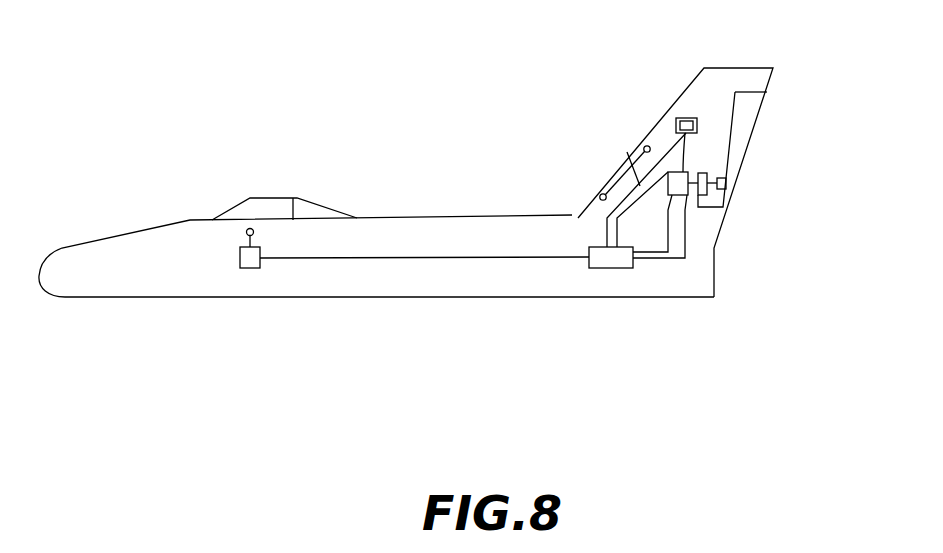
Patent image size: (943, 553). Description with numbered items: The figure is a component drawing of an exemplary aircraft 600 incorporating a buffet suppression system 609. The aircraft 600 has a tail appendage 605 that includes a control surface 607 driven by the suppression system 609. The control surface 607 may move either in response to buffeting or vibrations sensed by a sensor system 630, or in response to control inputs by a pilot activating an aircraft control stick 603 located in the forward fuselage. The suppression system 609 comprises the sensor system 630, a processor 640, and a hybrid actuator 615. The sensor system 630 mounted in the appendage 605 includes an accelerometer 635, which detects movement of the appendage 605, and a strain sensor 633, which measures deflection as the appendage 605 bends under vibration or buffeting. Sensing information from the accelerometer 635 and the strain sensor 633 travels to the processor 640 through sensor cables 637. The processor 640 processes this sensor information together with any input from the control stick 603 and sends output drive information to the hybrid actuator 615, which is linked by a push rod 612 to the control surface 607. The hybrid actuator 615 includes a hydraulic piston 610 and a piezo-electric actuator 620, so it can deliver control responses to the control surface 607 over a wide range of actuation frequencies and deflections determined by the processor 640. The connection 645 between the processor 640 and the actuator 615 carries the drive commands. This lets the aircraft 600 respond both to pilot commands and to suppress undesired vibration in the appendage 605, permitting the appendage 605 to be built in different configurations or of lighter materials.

The aircraft 600 is at (280, 355).
The aircraft control stick 603 is at (240, 258).
The tail appendage 605 is at (730, 80).
The control surface 607 is at (743, 107).
The buffet suppression system 609 is at (782, 345).
The hydraulic piston 610 is at (690, 172).
The push rod 612 is at (726, 183).
The hybrid actuator 615 is at (833, 135).
The piezo-electric actuator 620 is at (704, 174).
The sensor system 630 is at (611, 66).
The strain sensor 633 is at (627, 152).
The accelerometer 635 is at (686, 118).
The sensor cables 637 is at (595, 218).
The processor 640 is at (610, 268).
The wiring 645 is at (670, 267).